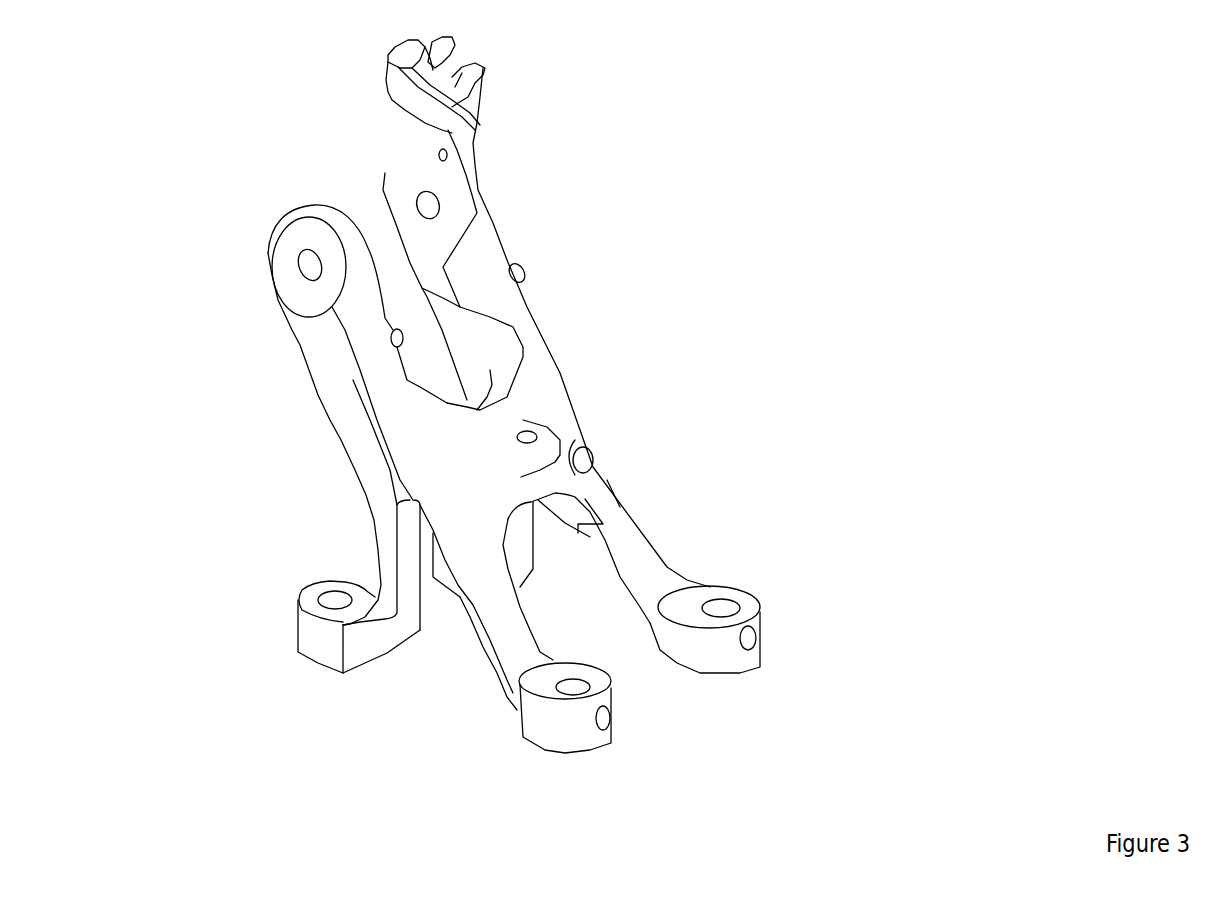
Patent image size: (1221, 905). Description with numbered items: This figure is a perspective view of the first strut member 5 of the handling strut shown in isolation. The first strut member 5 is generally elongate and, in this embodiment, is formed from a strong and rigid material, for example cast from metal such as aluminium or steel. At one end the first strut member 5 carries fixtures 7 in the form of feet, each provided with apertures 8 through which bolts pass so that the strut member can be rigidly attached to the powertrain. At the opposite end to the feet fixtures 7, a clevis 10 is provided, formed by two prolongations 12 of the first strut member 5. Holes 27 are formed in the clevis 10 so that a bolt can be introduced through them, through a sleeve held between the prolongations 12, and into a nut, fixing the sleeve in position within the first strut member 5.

The first strut member 5 is at (543, 400).
The fixtures 7 is at (315, 640).
The apertures 8 is at (336, 598).
The clevis 10 is at (460, 218).
The prolongations 12 is at (312, 378).
The holes 27 is at (422, 197).